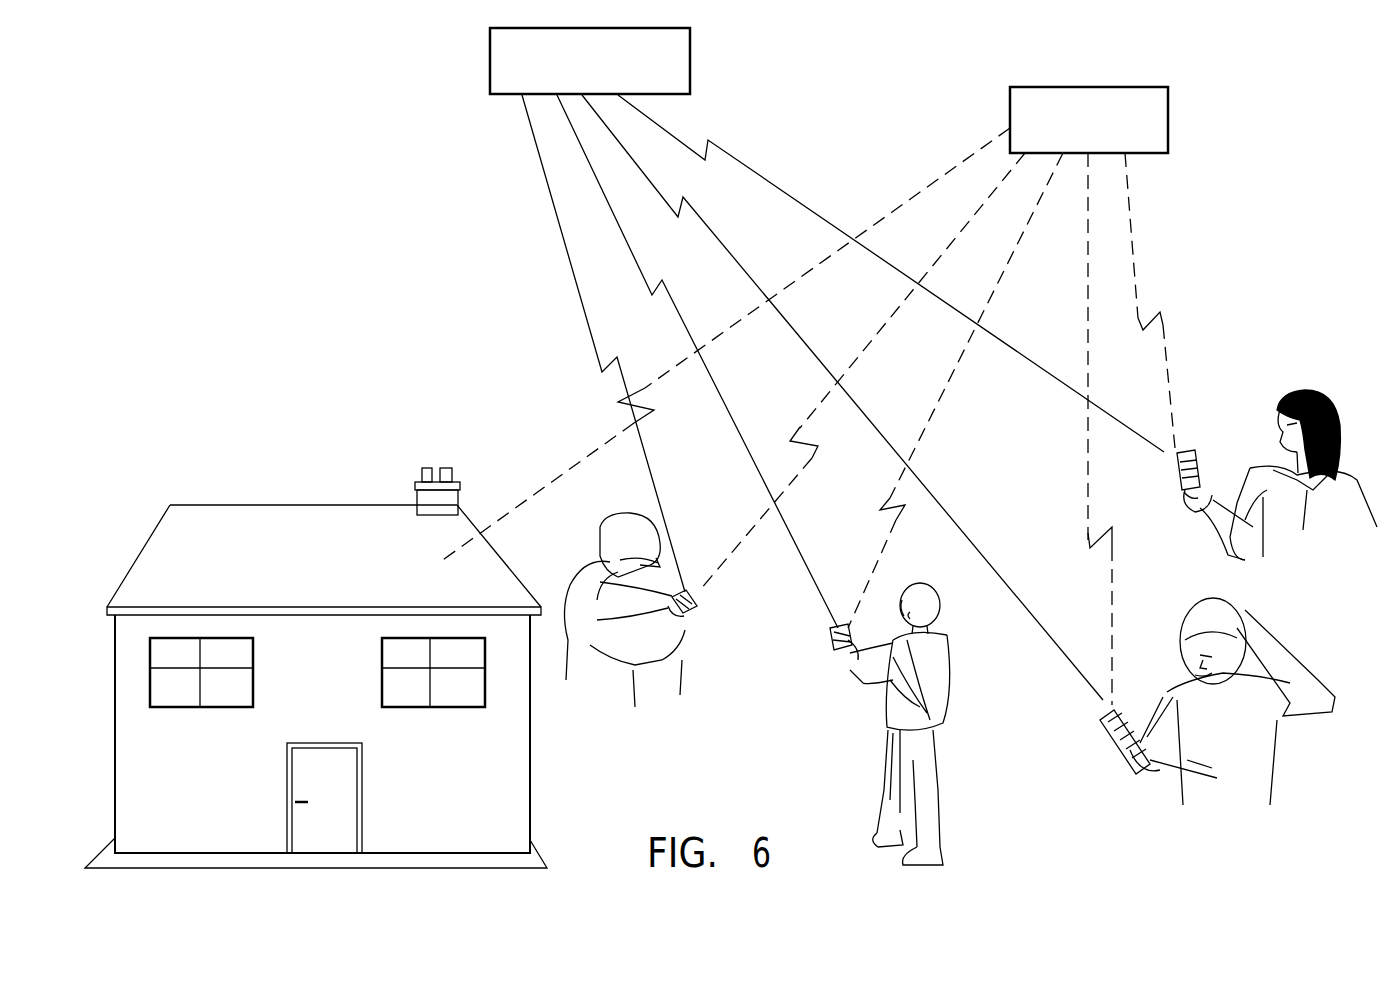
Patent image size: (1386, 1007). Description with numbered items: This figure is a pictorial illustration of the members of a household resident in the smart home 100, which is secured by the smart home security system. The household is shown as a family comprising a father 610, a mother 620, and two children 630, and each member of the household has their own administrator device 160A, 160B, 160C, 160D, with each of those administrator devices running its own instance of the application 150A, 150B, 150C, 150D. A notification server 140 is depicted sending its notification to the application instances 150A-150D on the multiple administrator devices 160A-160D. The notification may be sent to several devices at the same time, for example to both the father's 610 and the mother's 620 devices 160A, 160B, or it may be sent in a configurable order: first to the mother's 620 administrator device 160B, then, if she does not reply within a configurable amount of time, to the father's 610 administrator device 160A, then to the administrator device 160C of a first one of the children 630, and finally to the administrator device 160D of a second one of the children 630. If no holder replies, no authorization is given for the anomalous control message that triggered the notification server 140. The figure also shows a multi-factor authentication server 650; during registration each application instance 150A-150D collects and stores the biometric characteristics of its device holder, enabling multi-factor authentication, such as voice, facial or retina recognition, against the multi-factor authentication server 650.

The smart home 100 is at (278, 505).
The notification server 140 is at (1168, 118).
The instance of the application 150A is at (698, 600).
The instance of the application 150B is at (1108, 718).
The instance of the application 150C is at (1168, 462).
The instance of the application 150D is at (830, 634).
The administrator device 160A is at (686, 628).
The administrator device 160B is at (1130, 712).
The administrator device 160C is at (1203, 455).
The administrator device 160D is at (845, 668).
The father 610 is at (620, 516).
The mother 620 is at (1305, 395).
The children 630 is at (955, 633).
The multi-factor authentication server 650 is at (490, 55).